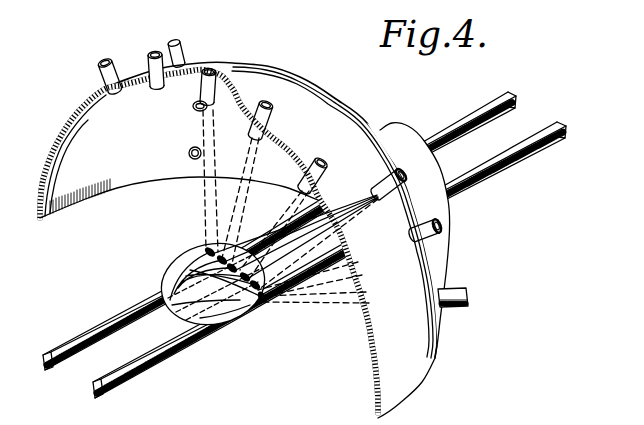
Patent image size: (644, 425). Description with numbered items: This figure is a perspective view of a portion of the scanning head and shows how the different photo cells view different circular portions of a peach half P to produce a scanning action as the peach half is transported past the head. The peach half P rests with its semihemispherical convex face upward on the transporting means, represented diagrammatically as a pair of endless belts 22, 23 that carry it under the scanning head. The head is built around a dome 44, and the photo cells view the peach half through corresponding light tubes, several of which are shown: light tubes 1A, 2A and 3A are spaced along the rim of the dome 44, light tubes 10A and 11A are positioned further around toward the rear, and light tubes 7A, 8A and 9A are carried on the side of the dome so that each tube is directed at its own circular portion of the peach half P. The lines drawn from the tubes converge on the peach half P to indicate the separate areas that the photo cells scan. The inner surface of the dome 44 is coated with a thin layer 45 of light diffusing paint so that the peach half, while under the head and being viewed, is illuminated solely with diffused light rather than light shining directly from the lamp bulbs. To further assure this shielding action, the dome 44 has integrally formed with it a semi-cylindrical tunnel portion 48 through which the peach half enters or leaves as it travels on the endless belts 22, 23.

The light tube 1A is at (220, 78).
The light tube 2A is at (272, 112).
The light tube 3A is at (313, 162).
The light tube 10A is at (147, 63).
The light tube 11A is at (97, 77).
The light tube 7A is at (386, 181).
The light tube 8A is at (437, 238).
The light tube 9A is at (457, 307).
The layer of light diffusing paint 45 is at (67, 156).
The semi-cylindrical tunnel portion 48 is at (443, 214).
The dome 44 is at (420, 355).
The peach half P is at (164, 275).
The endless belt 22 is at (80, 342).
The endless belt 23 is at (147, 373).